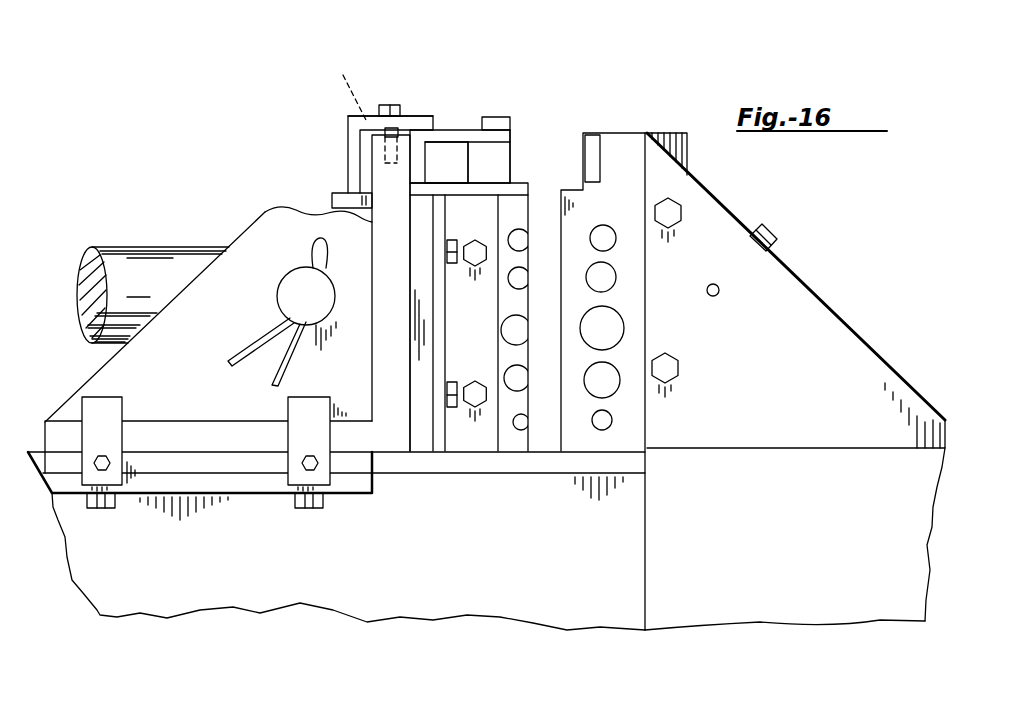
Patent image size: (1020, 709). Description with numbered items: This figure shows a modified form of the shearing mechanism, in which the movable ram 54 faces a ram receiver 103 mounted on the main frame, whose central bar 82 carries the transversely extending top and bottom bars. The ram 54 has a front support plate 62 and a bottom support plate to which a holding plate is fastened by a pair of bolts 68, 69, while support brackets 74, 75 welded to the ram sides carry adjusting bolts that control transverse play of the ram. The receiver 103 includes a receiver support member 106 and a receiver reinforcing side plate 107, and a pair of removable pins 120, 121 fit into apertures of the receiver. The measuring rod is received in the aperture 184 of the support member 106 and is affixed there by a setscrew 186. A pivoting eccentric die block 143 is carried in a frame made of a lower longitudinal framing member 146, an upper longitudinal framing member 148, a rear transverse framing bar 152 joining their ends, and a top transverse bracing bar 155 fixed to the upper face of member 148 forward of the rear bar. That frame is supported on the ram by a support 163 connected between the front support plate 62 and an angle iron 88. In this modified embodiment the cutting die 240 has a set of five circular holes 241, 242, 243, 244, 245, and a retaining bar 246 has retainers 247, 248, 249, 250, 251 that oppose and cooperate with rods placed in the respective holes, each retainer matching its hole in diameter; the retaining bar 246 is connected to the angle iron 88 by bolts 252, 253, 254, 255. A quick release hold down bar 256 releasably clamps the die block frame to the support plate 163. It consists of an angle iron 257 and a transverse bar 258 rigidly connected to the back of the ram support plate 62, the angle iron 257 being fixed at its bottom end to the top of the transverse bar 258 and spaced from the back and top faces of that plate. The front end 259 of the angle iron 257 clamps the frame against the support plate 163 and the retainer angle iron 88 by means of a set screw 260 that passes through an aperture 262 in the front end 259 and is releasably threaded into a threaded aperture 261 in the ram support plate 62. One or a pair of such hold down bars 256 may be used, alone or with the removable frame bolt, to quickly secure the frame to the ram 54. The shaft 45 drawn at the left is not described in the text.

The shaft 45 is at (123, 247).
The ram 54 is at (240, 226).
The front support plate 62 is at (382, 347).
The bolt 68 is at (98, 512).
The bolt 69 is at (308, 513).
The support bracket 74 is at (80, 462).
The support bracket 75 is at (287, 463).
The central bar 82 is at (286, 578).
The angle iron 88 is at (465, 200).
The ram receiver 103 is at (815, 279).
The receiver support member 106 is at (845, 365).
The receiver reinforcing side plate 107 is at (792, 585).
The removable pin 120 is at (660, 385).
The removable pin 121 is at (660, 232).
The pivoting eccentric die block 143 is at (503, 165).
The lower longitudinal framing member 146 is at (480, 187).
The upper longitudinal framing member 148 is at (503, 153).
The rear transverse framing bar 152 is at (420, 135).
The top transverse bracing bar 155 is at (492, 117).
The support 163 is at (417, 277).
The aperture 184 is at (715, 298).
The setscrew 186 is at (768, 235).
The cutting die 240 is at (610, 132).
The circular hole 241 is at (593, 229).
The circular hole 242 is at (617, 283).
The circular hole 243 is at (624, 340).
The circular hole 244 is at (620, 370).
The circular hole 245 is at (600, 432).
The retaining bar 246 is at (530, 207).
The retainer 247 is at (505, 193).
The retainer 248 is at (492, 240).
The retainer 249 is at (503, 317).
The retainer 250 is at (530, 410).
The retainer 251 is at (522, 430).
The bolt 252 is at (476, 410).
The bolt 253 is at (448, 262).
The bolt 254 is at (449, 410).
The bolt 255 is at (440, 275).
The quick release hold down bar 256 is at (348, 145).
The angle iron 257 is at (375, 124).
The transverse bar 258 is at (337, 202).
The front end 259 is at (416, 140).
The set screw 260 is at (388, 105).
The threaded aperture 261 is at (385, 160).
The aperture 262 is at (337, 86).